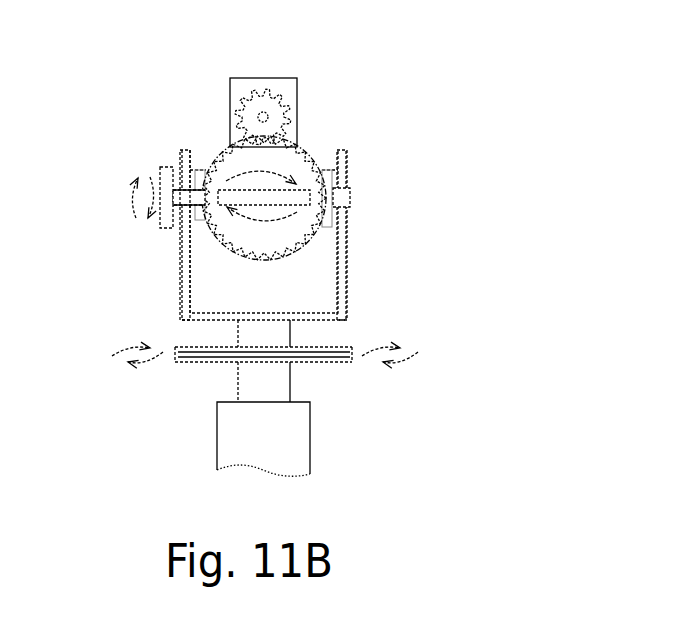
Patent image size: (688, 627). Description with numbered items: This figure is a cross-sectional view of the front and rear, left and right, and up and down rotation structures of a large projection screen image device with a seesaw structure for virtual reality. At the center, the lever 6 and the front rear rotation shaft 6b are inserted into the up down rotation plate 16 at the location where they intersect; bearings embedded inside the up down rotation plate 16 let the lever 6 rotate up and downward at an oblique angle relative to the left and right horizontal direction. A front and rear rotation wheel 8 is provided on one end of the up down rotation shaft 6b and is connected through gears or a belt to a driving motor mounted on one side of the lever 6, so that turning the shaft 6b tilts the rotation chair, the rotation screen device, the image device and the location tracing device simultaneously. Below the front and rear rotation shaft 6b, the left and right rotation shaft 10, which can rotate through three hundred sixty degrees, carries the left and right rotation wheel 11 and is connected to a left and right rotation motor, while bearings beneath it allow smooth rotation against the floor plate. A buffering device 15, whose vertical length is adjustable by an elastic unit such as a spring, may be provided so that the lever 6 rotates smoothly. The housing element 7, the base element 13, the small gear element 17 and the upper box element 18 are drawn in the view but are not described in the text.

The lever 6 is at (345, 184).
The up down rotation shaft 6b is at (352, 197).
The housing 7 is at (347, 270).
The front and rear rotation wheel 8 is at (166, 172).
The left and right rotation shaft 10 is at (282, 331).
The left and right rotation wheel 11 is at (338, 362).
The base 13 is at (237, 443).
The buffering device 15 is at (228, 156).
The up down rotation plate 16 is at (298, 152).
The pinion gear 17 is at (287, 108).
The motor housing 18 is at (286, 78).